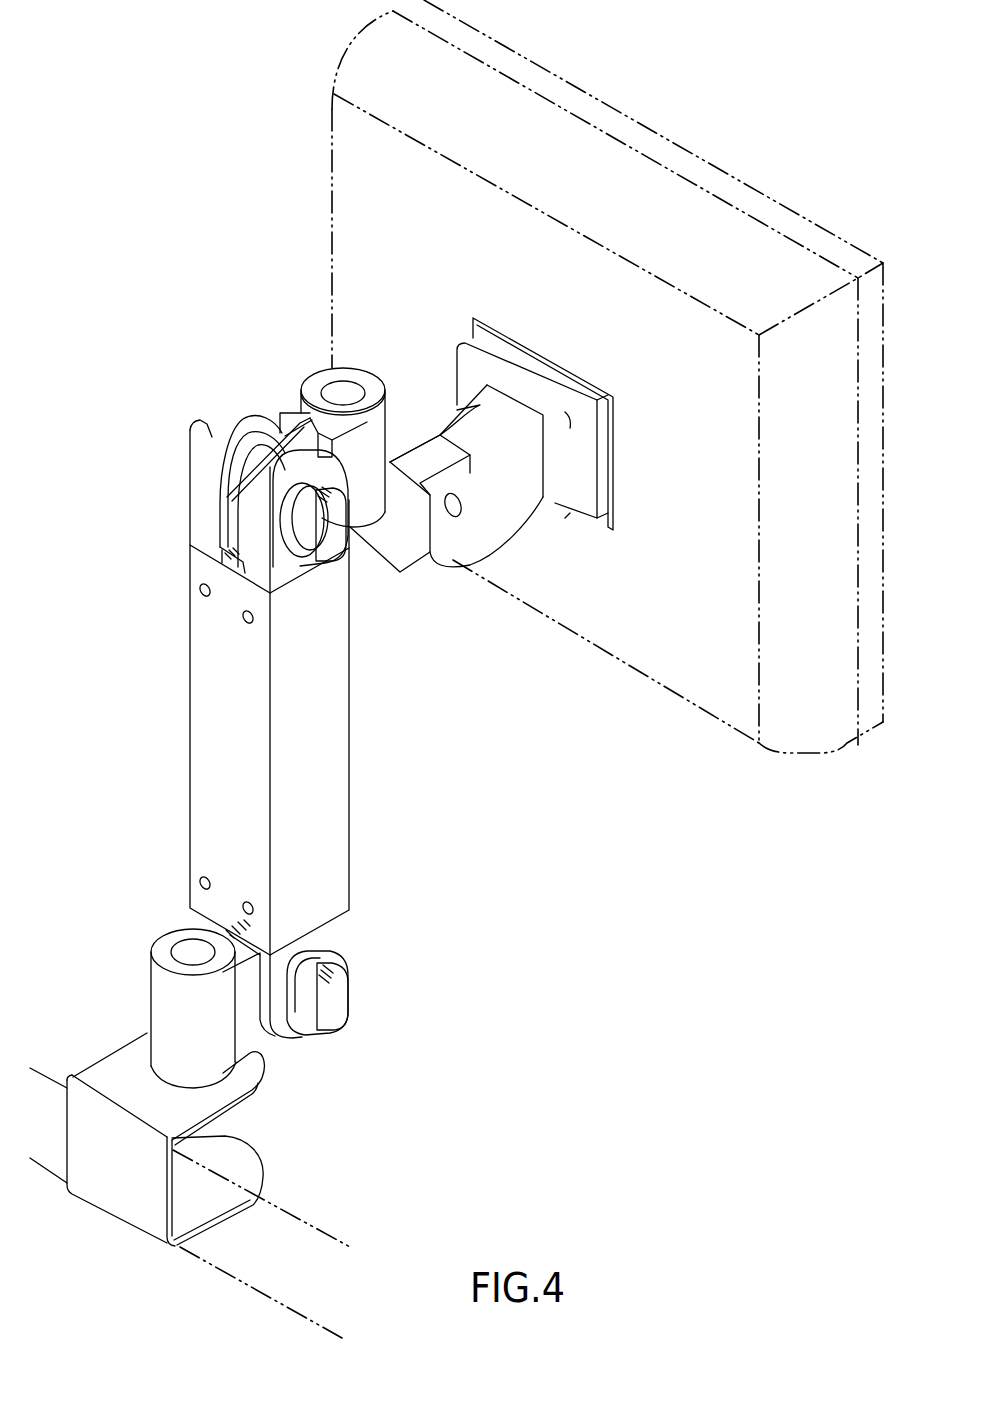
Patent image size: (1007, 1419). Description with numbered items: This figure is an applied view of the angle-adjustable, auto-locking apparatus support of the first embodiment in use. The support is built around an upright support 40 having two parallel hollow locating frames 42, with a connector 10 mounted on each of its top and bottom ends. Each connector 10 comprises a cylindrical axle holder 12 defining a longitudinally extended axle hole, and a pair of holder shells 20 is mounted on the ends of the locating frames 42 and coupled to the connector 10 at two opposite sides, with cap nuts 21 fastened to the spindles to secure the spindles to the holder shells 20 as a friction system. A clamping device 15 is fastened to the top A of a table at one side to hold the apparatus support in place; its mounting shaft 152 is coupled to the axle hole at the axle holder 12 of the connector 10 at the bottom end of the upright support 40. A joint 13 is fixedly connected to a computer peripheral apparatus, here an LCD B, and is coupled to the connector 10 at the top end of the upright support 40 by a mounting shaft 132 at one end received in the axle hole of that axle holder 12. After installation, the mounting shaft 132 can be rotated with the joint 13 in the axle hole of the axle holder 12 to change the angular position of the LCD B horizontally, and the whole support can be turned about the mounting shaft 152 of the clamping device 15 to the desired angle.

The connector 10 is at (265, 683).
The cylindrical axle holder 12 is at (320, 408).
The joint 13 is at (456, 570).
The mounting shaft 132 is at (340, 393).
The mounting shaft 152 is at (190, 950).
The clamping device 15 is at (222, 1093).
The holder shell 20 is at (207, 477).
The cap nut 21 is at (340, 543).
The upright support 40 is at (193, 674).
The hollow locating frame 42 is at (335, 700).
The top of a table A is at (273, 1270).
The LCD B is at (655, 635).